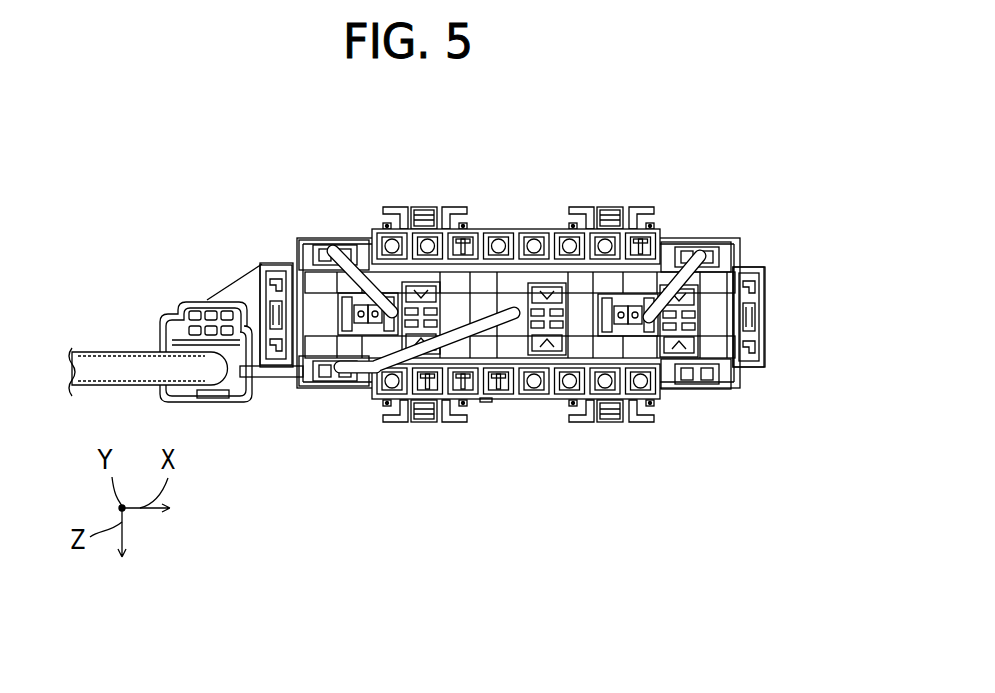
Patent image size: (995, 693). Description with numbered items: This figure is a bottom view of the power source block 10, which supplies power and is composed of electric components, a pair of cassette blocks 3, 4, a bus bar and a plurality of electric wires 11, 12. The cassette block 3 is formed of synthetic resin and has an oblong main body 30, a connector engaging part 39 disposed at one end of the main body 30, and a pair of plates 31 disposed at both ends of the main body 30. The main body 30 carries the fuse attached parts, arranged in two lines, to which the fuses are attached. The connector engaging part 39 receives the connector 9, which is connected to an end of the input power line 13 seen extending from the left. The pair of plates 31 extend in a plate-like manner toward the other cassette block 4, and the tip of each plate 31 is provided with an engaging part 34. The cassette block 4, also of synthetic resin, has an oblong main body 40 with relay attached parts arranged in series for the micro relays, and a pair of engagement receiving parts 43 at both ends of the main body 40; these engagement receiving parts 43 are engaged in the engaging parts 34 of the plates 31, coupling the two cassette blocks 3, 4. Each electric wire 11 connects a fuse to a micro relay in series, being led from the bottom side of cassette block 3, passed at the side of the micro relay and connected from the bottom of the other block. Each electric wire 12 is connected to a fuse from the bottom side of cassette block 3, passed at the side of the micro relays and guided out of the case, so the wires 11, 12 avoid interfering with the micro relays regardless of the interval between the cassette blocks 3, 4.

The cassette block 3 is at (486, 224).
The cassette block 4 is at (522, 276).
The connector 9 is at (168, 330).
The power source block 10 is at (710, 152).
The electric wire 11 is at (364, 231).
The electric wire 12 is at (540, 230).
The input power line 13 is at (95, 350).
The main body 30 is at (487, 403).
The plate 31 is at (262, 266).
The engaging part 34 is at (291, 340).
The connector engaging part 39 is at (249, 404).
The main body 40 is at (508, 395).
The engagement receiving part 43 is at (280, 270).